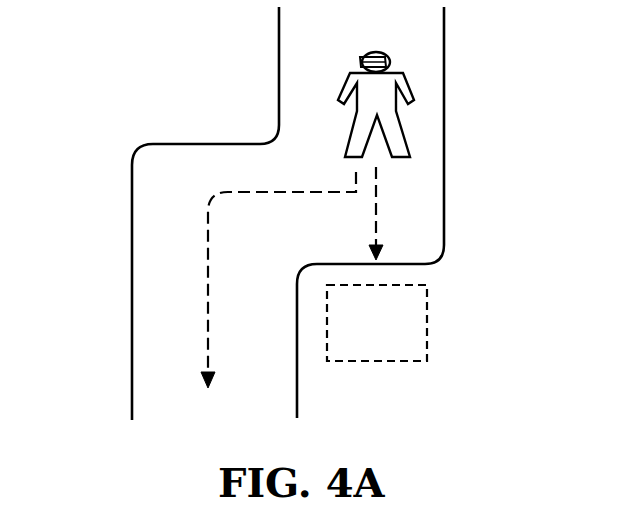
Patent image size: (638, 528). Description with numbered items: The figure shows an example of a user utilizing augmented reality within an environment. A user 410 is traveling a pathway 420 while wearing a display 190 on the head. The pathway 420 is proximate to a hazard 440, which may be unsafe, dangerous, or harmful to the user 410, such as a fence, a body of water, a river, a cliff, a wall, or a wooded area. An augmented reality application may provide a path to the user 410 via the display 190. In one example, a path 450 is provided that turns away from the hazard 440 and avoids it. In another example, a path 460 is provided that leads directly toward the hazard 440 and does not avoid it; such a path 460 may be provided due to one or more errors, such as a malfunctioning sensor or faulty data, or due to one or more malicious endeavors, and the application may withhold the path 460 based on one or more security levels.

The pathway 420 is at (310, 28).
The user 410 is at (369, 52).
The display 190 is at (360, 62).
The path 450 is at (207, 272).
The path 460 is at (376, 217).
The hazard 440 is at (362, 348).